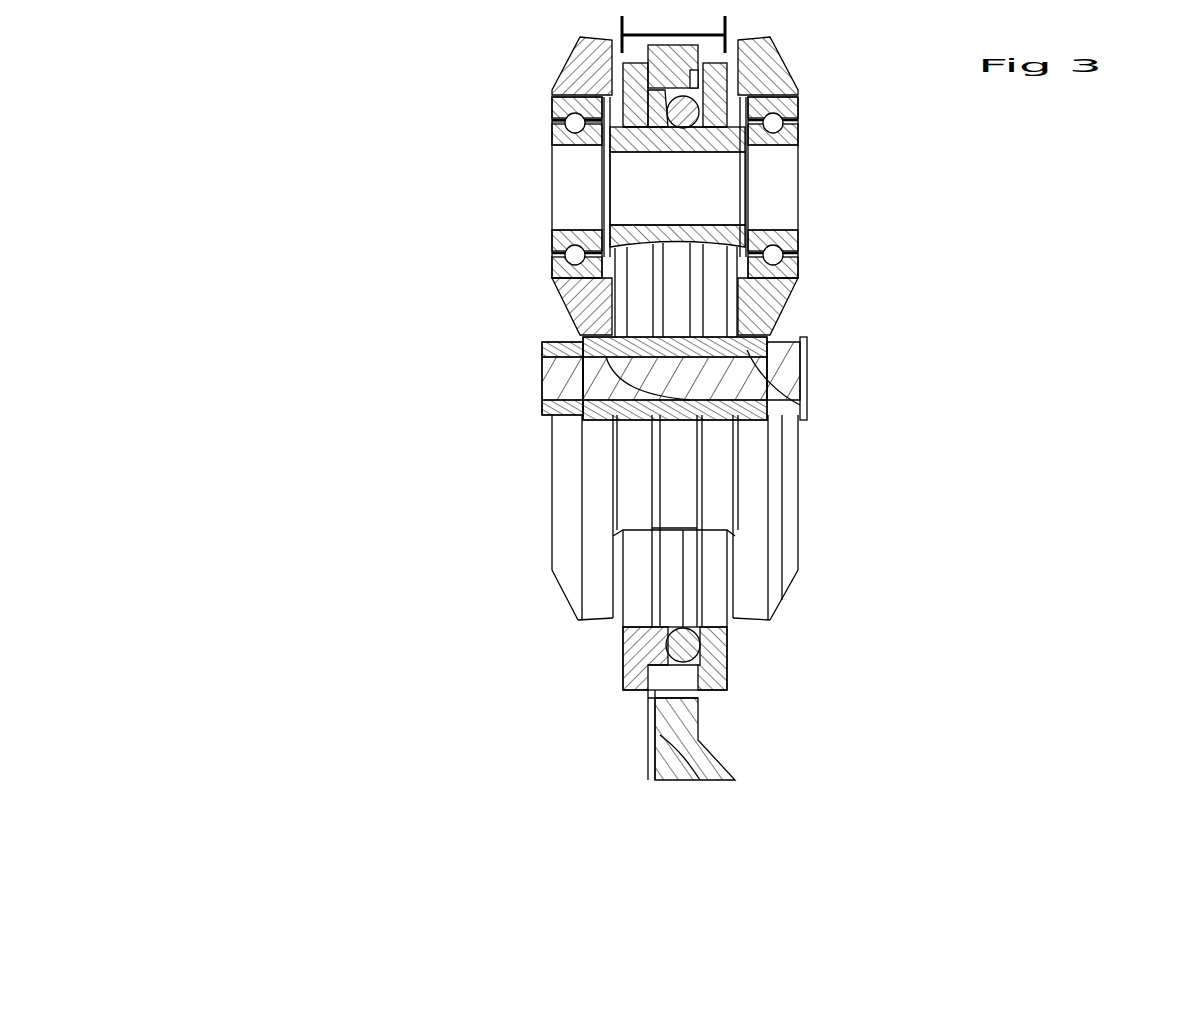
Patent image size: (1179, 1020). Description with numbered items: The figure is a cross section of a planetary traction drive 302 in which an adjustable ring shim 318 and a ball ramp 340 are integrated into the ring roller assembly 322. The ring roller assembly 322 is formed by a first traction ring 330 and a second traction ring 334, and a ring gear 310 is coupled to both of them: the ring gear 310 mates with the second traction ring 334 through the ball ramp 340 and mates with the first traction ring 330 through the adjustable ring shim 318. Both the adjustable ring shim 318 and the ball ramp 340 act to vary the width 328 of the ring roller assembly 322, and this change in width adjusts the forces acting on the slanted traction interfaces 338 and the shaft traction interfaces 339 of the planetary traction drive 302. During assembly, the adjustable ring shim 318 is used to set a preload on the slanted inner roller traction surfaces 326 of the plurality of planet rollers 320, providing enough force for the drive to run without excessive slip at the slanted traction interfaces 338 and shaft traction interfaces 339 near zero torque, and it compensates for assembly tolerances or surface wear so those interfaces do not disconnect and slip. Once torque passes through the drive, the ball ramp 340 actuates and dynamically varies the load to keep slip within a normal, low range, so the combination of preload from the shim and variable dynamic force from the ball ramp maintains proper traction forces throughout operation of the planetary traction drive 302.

The planetary traction drive 302 is at (296, 160).
The ring gear 310 is at (652, 697).
The adjustable ring shim 318 is at (655, 642).
The plurality of planet rollers 320 is at (567, 305).
The ring roller assembly 322 is at (732, 58).
The slanted inner roller traction surfaces 326 is at (645, 128).
The width 328 is at (681, 35).
The first traction ring 330 is at (640, 88).
The second traction ring 334 is at (780, 81).
The slanted traction interfaces 338 is at (735, 132).
The shaft traction interfaces 339 is at (750, 350).
The ball ramp 340 is at (700, 648).